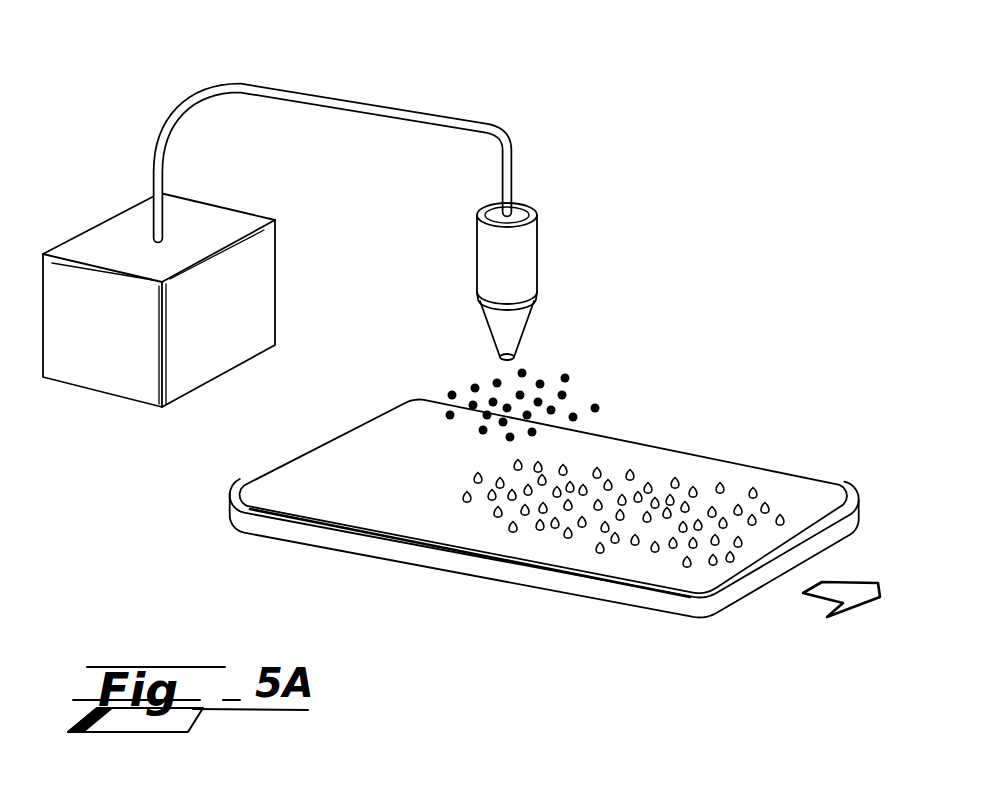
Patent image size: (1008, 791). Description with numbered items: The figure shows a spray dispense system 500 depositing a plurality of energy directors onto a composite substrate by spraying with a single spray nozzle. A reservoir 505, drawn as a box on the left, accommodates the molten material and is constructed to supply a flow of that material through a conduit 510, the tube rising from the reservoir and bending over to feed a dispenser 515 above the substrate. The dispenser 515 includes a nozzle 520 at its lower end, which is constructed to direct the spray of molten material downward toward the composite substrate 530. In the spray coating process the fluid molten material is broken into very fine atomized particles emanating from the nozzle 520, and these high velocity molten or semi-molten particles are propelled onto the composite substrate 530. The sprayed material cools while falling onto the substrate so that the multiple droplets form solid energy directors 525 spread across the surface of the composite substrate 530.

The spray dispense system 500 is at (708, 230).
The reservoir 505 is at (102, 375).
The conduit 510 is at (390, 107).
The dispenser 515 is at (538, 231).
The nozzle 520 is at (483, 320).
The energy directors 525 is at (634, 468).
The composite substrate 530 is at (370, 465).